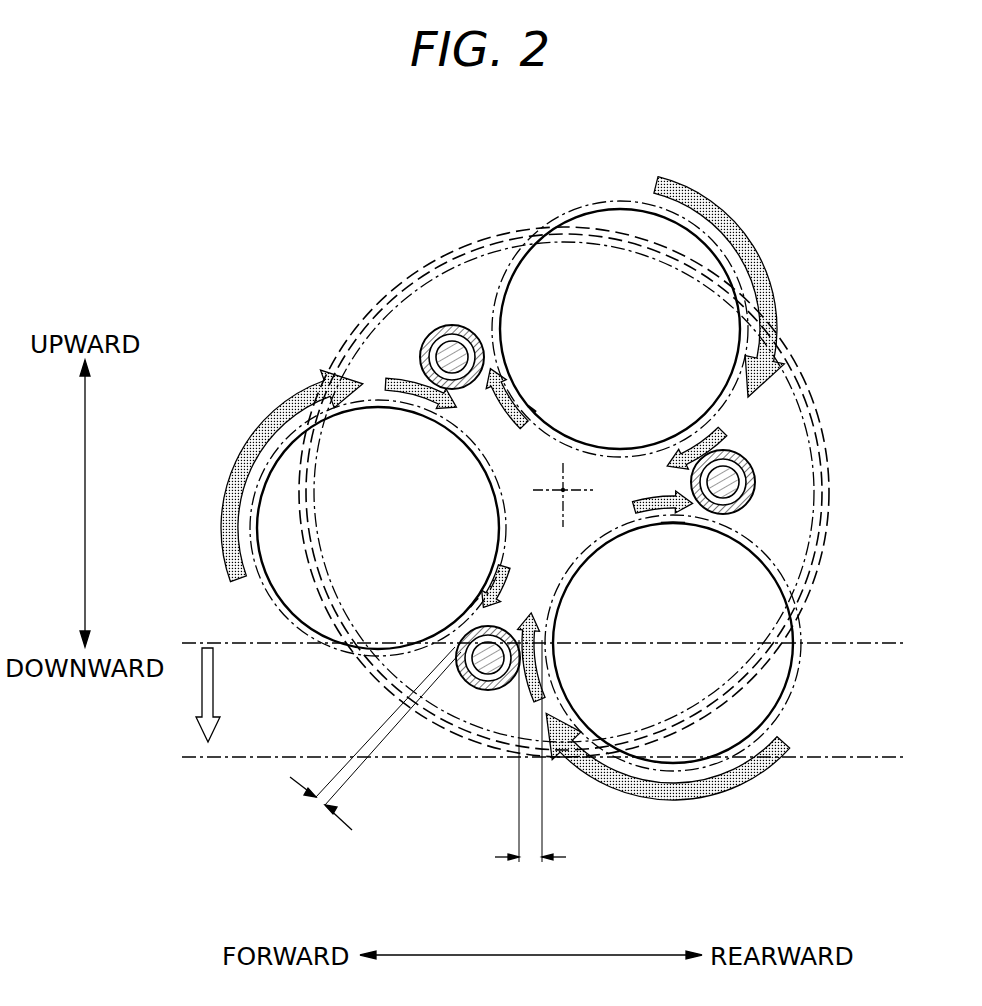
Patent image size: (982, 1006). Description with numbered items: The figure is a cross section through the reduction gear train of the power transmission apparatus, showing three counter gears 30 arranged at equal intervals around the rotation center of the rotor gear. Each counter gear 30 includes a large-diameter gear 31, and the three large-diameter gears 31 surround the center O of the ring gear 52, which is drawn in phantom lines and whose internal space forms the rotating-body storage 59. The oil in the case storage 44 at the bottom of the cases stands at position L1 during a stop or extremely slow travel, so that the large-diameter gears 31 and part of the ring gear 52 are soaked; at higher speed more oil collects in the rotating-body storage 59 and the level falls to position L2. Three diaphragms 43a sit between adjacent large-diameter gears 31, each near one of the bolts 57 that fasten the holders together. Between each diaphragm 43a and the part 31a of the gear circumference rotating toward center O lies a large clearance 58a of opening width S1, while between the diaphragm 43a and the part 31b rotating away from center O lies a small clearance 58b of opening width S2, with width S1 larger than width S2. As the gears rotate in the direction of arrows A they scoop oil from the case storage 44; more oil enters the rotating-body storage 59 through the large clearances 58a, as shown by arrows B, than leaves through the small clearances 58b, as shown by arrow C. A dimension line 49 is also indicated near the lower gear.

The counter gear 30 is at (524, 472).
The large-diameter gear 31 is at (567, 228).
The part rotating from the outer circumference toward the center 31a is at (396, 410).
The part rotating from the center toward the outer circumference 31b is at (527, 407).
The diaphragm 43a is at (430, 334).
The bolt 57 is at (452, 357).
The large clearance 58a is at (422, 380).
The small clearance 58b is at (480, 350).
The case storage 44 is at (496, 799).
The reference line 49 is at (543, 763).
The ring gear 52 is at (360, 675).
The rotating-body storage 59 is at (606, 529).
The center of the ring gear O is at (563, 490).
The arrows A is at (758, 240).
The arrows B is at (472, 423).
The arrow C is at (505, 413).
The oil level position L1 is at (190, 642).
The oil level position L2 is at (195, 757).
The opening width of the large clearance S1 is at (530, 768).
The opening width of the small clearance S2 is at (375, 743).